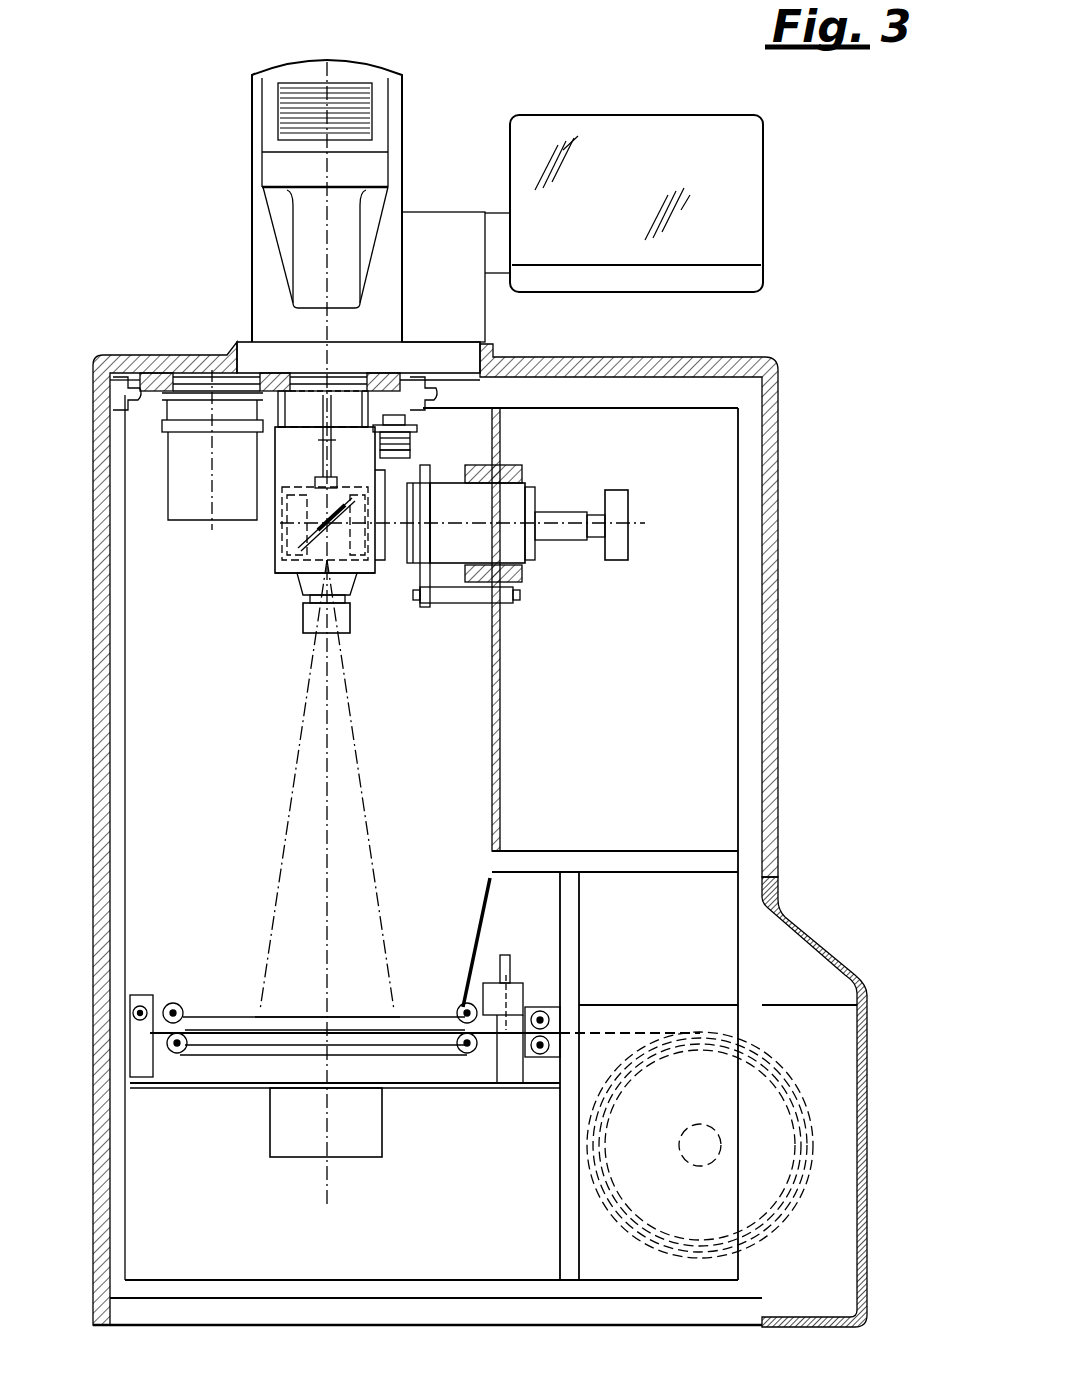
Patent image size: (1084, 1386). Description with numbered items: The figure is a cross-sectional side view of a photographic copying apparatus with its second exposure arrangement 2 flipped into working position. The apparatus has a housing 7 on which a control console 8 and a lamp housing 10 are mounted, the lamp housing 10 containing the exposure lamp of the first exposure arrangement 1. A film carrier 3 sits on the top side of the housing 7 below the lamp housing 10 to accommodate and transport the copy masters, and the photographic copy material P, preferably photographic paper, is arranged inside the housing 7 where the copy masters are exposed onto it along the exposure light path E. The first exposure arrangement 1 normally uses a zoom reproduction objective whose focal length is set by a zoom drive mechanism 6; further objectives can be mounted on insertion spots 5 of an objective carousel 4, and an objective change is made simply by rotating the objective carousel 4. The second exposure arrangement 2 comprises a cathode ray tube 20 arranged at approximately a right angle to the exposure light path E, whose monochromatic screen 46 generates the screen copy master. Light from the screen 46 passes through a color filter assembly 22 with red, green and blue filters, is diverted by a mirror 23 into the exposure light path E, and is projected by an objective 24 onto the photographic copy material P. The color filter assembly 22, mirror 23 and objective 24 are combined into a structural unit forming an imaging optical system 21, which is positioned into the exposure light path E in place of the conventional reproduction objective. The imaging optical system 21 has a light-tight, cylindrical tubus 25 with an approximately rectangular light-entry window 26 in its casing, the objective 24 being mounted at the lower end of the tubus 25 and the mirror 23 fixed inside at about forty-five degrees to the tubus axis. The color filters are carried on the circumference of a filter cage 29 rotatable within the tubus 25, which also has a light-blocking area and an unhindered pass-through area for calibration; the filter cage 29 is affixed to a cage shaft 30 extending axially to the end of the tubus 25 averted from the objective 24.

The first exposure arrangement 1 is at (464, 692).
The second exposure arrangement 2 is at (238, 710).
The film carrier 3 is at (350, 326).
The objective carousel 4 is at (162, 370).
The insertion spot 5 is at (192, 372).
The zoom drive mechanism 6 is at (405, 432).
The housing 7 is at (779, 594).
The control console 8 is at (742, 162).
The lamp housing 10 is at (380, 172).
The cathode ray tube 20 is at (512, 503).
The imaging optical system 21 is at (293, 539).
The color filter assembly 22 is at (368, 580).
The mirror 23 is at (283, 540).
The objective 24 is at (310, 624).
The tubus 25 is at (296, 474).
The light-entry window 26 is at (365, 565).
The filter cage 29 is at (276, 580).
The cage shaft 30 is at (318, 447).
The screen 46 is at (380, 548).
The exposure light path E is at (303, 840).
The photographic copy material P is at (268, 1025).